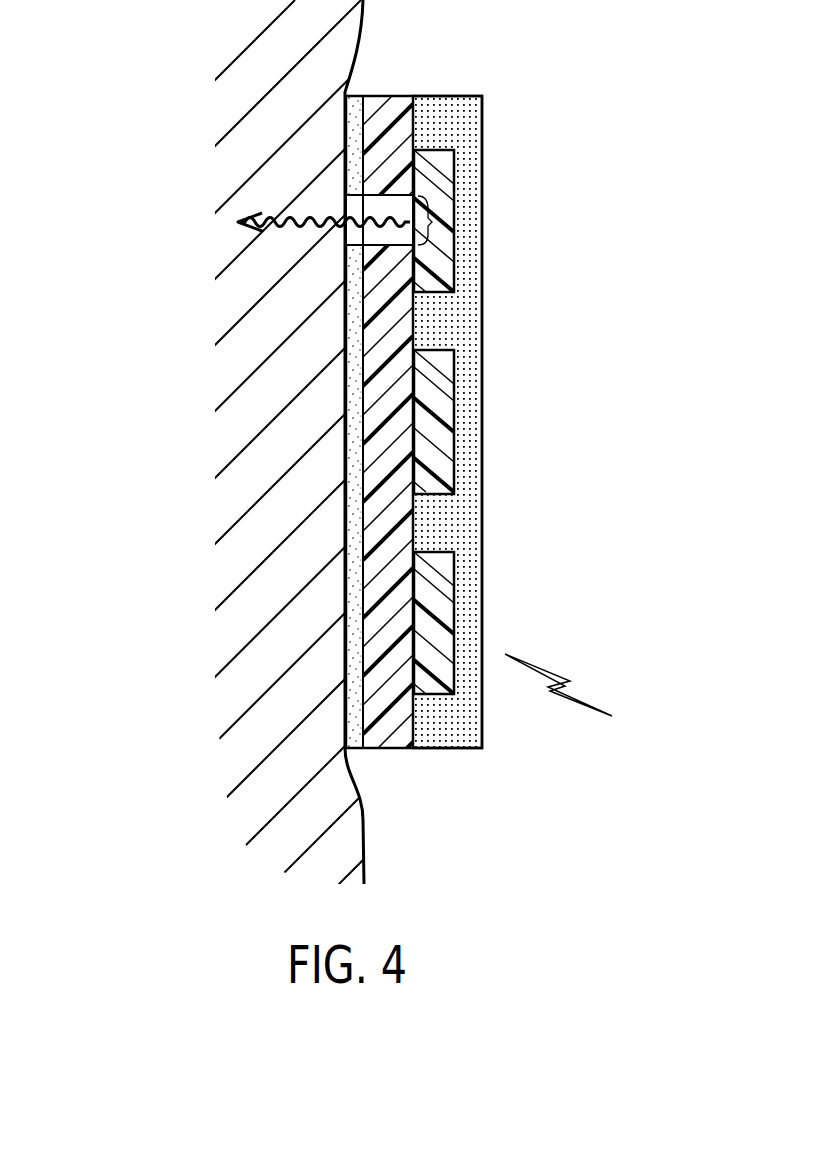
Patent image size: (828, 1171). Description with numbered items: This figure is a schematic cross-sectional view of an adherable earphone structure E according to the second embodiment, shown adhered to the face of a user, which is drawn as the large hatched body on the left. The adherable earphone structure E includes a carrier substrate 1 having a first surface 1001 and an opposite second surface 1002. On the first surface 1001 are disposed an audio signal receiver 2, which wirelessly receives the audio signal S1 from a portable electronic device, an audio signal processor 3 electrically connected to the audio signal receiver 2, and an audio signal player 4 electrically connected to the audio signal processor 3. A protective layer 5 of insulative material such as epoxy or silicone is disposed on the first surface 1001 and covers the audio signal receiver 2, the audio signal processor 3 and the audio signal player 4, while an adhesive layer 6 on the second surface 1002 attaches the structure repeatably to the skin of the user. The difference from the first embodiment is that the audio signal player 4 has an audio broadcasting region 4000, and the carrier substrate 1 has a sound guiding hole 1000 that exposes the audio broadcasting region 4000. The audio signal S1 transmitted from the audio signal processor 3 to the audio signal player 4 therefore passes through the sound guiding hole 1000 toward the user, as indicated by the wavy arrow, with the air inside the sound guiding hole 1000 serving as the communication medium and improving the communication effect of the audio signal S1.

The carrier substrate 1 is at (379, 84).
The sound guiding hole 1000 is at (369, 204).
The first surface 1001 is at (428, 122).
The second surface 1002 is at (349, 135).
The audio signal receiver 2 is at (461, 610).
The audio signal processor 3 is at (461, 420).
The audio signal player 4 is at (461, 163).
The audio broadcasting region 4000 is at (432, 222).
The protective layer 5 is at (490, 316).
The adhesive layer 6 is at (340, 395).
The adherable earphone structure E is at (521, 524).
The audio signal S1 is at (565, 683).